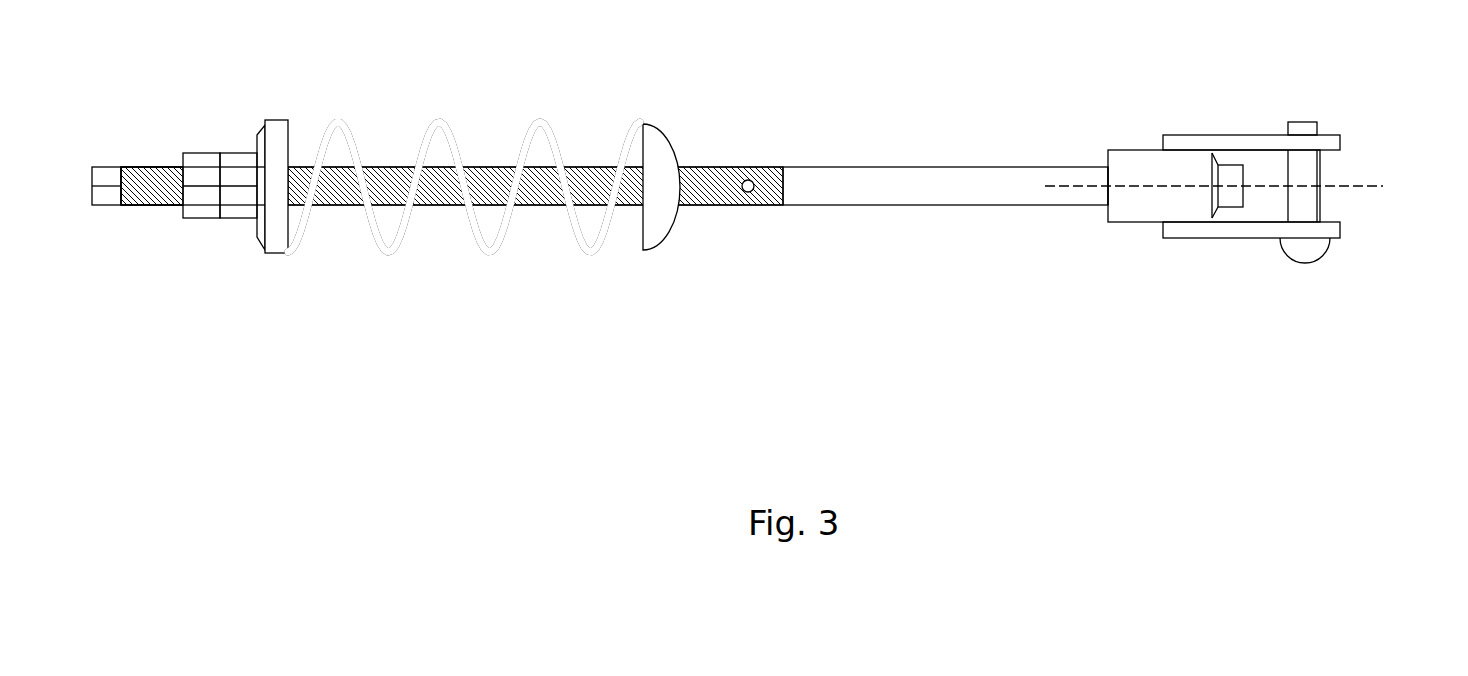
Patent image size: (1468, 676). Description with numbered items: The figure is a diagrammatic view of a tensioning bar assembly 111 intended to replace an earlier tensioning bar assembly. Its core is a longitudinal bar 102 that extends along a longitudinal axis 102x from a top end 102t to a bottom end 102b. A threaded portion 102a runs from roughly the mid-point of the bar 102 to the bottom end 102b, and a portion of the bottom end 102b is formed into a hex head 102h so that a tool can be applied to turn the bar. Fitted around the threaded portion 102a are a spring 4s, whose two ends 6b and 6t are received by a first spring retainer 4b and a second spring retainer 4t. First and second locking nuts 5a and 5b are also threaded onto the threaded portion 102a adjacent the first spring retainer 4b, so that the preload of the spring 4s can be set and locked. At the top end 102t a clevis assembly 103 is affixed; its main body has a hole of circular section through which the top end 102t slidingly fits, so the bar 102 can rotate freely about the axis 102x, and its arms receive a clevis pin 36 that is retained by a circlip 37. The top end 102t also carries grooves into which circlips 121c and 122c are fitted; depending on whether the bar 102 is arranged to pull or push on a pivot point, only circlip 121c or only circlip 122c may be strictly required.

The longitudinal bar 102 is at (938, 166).
The threaded portion 102a is at (732, 166).
The bottom end 102b is at (136, 160).
The hex head 102h is at (107, 207).
The top end 102t is at (1148, 238).
The longitudinal axis 102x is at (1248, 187).
The first locking nut 5a is at (238, 152).
The second locking nut 5b is at (204, 152).
The first spring retainer 4b is at (277, 254).
The second spring retainer 4t is at (657, 228).
The spring 4s is at (442, 122).
The spring end 6b is at (318, 258).
The spring end 6t is at (598, 262).
The circlip 122c is at (1105, 166).
The circlip 121c is at (1217, 163).
The clevis assembly 103 is at (1183, 130).
The circlip 37 is at (1333, 145).
The clevis pin 36 is at (1307, 205).
The tensioning bar assembly 111 is at (1060, 378).